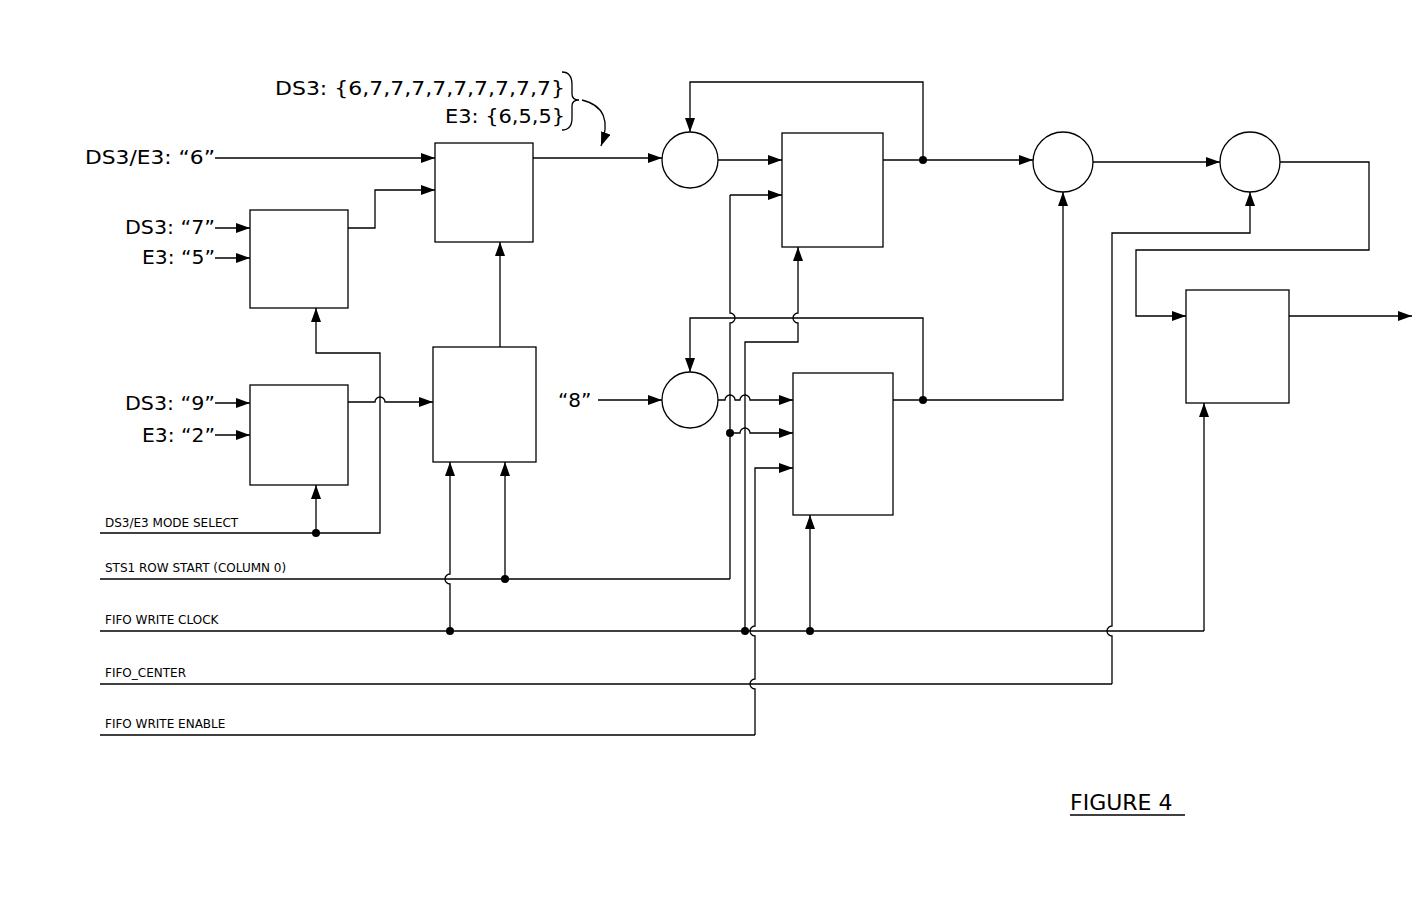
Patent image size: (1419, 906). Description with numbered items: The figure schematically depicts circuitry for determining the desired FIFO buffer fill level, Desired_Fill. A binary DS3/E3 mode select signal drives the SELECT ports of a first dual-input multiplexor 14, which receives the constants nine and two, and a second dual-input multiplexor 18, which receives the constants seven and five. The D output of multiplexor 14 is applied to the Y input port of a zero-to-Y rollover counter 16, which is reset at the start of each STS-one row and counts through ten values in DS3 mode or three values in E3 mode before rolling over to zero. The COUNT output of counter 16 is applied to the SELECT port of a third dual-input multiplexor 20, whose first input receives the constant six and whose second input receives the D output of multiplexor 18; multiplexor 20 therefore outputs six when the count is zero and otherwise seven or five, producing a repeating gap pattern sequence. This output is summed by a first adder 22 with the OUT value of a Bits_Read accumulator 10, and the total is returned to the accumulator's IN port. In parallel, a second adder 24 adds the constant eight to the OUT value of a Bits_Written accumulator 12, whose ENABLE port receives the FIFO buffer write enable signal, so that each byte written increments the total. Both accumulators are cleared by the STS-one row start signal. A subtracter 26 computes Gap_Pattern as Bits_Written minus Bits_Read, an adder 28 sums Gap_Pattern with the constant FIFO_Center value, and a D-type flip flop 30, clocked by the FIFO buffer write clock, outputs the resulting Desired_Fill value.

The Bits_Read accumulator 10 is at (883, 213).
The Bits_Written accumulator 12 is at (893, 478).
The first dual-input multiplexor 14 is at (283, 385).
The 0-to-Y rollover counter 16 is at (536, 430).
The second dual-input multiplexor 18 is at (348, 271).
The third dual-input multiplexor 20 is at (533, 205).
The first adder 22 is at (676, 190).
The second adder 24 is at (674, 430).
The subtracter 26 is at (1050, 135).
The adder 28 is at (1238, 135).
The D-type flip flop 30 is at (1289, 373).